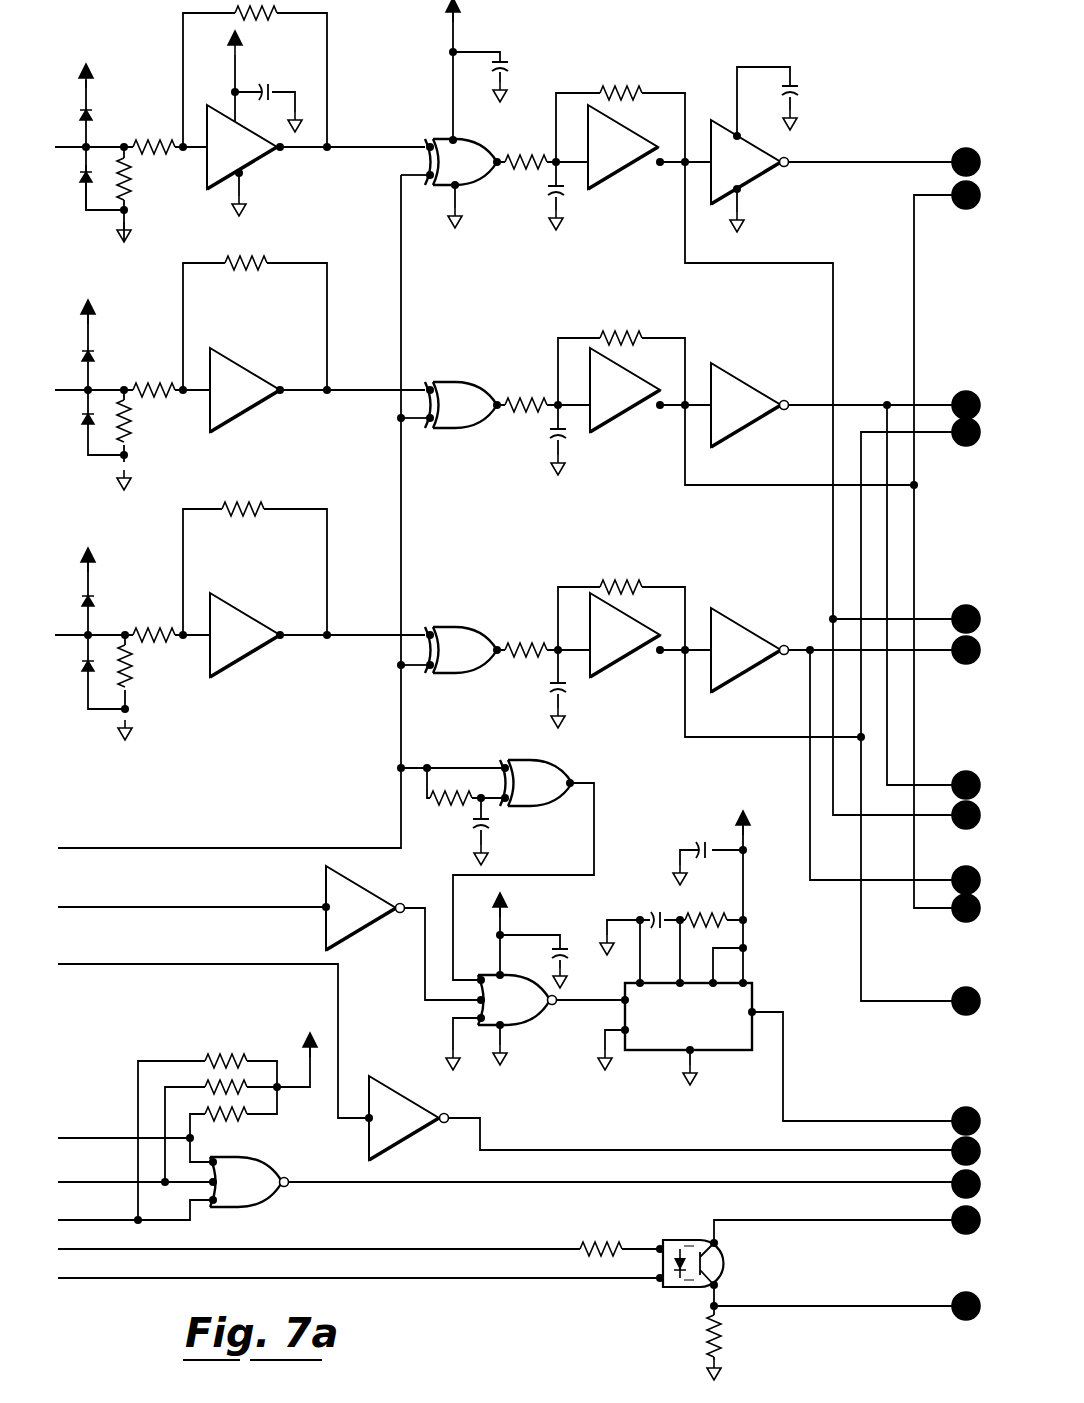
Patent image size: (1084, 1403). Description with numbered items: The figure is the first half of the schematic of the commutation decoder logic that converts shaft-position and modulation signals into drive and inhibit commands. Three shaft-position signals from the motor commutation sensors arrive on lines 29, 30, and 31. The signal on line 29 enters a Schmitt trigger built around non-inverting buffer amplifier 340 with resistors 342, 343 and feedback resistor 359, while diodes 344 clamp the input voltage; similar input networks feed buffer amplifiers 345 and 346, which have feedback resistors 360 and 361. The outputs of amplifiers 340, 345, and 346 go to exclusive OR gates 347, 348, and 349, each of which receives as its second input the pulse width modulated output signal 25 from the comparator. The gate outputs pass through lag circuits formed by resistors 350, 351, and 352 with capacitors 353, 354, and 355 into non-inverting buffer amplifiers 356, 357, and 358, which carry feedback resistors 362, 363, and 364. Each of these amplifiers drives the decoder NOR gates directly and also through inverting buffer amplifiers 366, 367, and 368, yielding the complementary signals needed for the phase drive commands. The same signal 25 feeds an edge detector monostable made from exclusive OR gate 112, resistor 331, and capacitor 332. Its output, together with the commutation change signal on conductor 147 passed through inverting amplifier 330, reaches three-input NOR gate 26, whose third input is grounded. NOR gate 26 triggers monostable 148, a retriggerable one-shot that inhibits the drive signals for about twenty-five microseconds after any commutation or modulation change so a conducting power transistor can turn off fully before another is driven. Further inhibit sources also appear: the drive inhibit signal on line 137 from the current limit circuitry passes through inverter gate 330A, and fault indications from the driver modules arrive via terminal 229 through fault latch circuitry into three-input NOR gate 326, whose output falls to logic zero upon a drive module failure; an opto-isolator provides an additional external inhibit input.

The line 29 is at (80, 150).
The line 30 is at (82, 393).
The line 31 is at (80, 640).
The resistor 343 is at (165, 138).
The resistor 342 is at (132, 178).
The diodes 344 is at (82, 182).
The buffer amplifier 340 is at (262, 165).
The buffer amplifier 345 is at (250, 415).
The buffer amplifier 346 is at (250, 612).
The feedback resistor 359 is at (258, 18).
The feedback resistor 360 is at (245, 260).
The feedback resistor 361 is at (246, 506).
The exclusive OR gate 347 is at (472, 190).
The exclusive OR gate 348 is at (455, 380).
The exclusive OR gate 349 is at (458, 625).
The resistor 350 is at (525, 155).
The resistor 351 is at (530, 400).
The resistor 352 is at (518, 645).
The capacitor 353 is at (548, 196).
The capacitor 354 is at (548, 437).
The capacitor 355 is at (548, 690).
The non-inverting buffer amplifier 356 is at (612, 135).
The non-inverting buffer amplifier 357 is at (612, 378).
The non-inverting buffer amplifier 358 is at (612, 624).
The feedback resistor 362 is at (618, 90).
The feedback resistor 363 is at (622, 335).
The feedback resistor 364 is at (620, 584).
The inverting buffer amplifier 366 is at (752, 185).
The inverting buffer amplifier 367 is at (744, 378).
The inverting buffer amplifier 368 is at (744, 622).
The exclusive OR gate 112 is at (552, 758).
The resistor 331 is at (455, 806).
The capacitor 332 is at (494, 828).
The pulse width modulated output signal 25 is at (152, 850).
The conductor 147 is at (250, 905).
The line 137 is at (255, 966).
The inverting amplifier 330 is at (348, 875).
The inverter gate 330A is at (393, 1095).
The NOR gate 26 is at (520, 1026).
The monostable 148 is at (755, 986).
The three-input NOR gate 326 is at (250, 1160).
The terminal 229 is at (120, 1222).